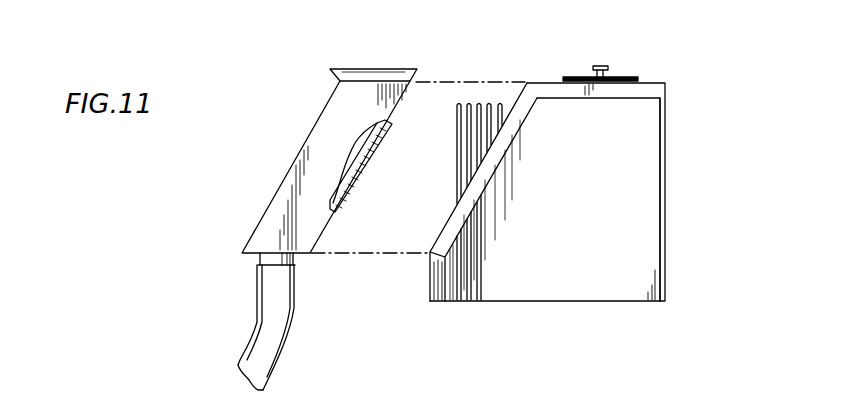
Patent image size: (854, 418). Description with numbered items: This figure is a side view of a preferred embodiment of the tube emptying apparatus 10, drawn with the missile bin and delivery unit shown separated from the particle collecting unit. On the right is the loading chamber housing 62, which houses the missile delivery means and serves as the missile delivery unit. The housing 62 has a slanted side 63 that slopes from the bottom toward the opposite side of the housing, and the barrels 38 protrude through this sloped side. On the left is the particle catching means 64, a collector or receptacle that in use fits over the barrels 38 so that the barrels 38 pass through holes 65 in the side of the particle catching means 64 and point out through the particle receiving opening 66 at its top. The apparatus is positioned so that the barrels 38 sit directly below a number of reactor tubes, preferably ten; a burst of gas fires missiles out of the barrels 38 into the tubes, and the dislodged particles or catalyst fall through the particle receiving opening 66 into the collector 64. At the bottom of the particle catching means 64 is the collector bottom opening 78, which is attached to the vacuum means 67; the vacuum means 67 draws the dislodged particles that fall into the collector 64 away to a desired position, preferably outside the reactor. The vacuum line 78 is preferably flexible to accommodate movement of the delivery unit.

The tube emptying apparatus 10 is at (645, 77).
The barrels 38 is at (456, 133).
The loading chamber housing 62 is at (645, 223).
The slanted side 63 is at (518, 97).
The particle catching means 64 is at (304, 145).
The holes 65 is at (350, 191).
The particle receiving opening 66 is at (380, 68).
The vacuum means 67 is at (249, 292).
The collector bottom opening 78 is at (297, 257).